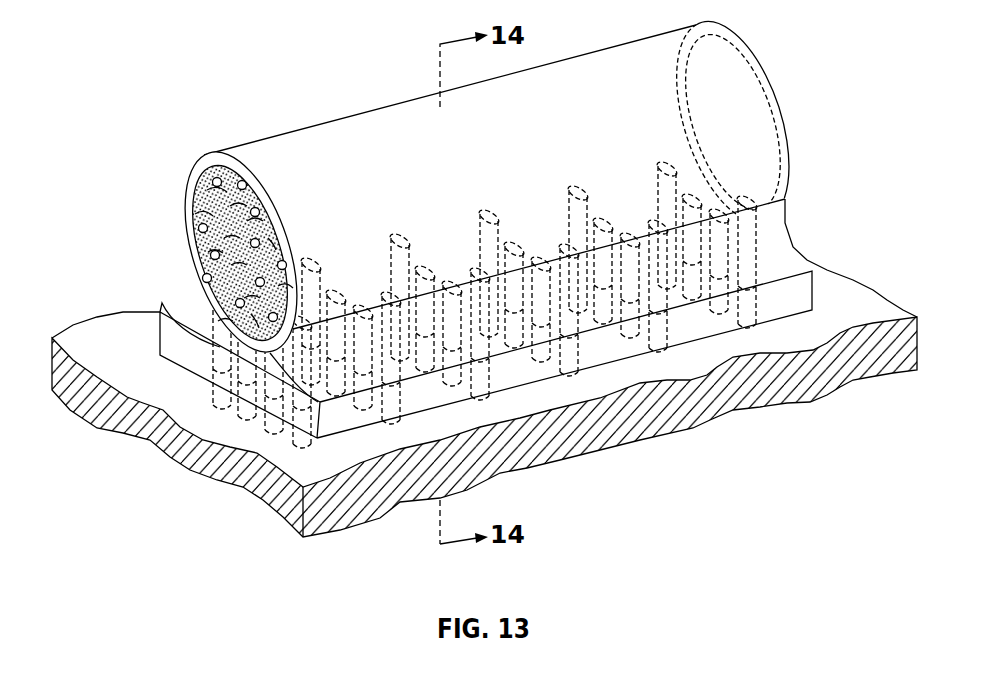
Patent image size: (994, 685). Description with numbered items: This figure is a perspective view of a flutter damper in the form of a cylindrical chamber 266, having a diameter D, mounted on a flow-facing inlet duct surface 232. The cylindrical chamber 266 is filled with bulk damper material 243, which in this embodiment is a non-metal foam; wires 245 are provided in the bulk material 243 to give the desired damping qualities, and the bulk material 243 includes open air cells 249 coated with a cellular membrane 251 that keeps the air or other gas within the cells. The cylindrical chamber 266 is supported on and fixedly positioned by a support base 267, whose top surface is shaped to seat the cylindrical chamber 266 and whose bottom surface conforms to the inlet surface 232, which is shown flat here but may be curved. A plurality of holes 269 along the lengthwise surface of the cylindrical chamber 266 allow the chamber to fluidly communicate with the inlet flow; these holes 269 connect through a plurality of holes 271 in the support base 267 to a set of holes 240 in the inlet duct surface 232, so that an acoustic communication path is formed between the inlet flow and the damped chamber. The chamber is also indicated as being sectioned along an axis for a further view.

The inlet duct surface 232 is at (848, 296).
The holes 240 is at (220, 410).
The bulk damper material 243 is at (203, 193).
The wires 245 is at (237, 180).
The open air cells 249 is at (169, 250).
The cellular membrane 251 is at (196, 226).
The cylindrical chamber 266 is at (731, 32).
The support base 267 is at (176, 335).
The holes 269 is at (192, 277).
The holes 271 is at (172, 308).